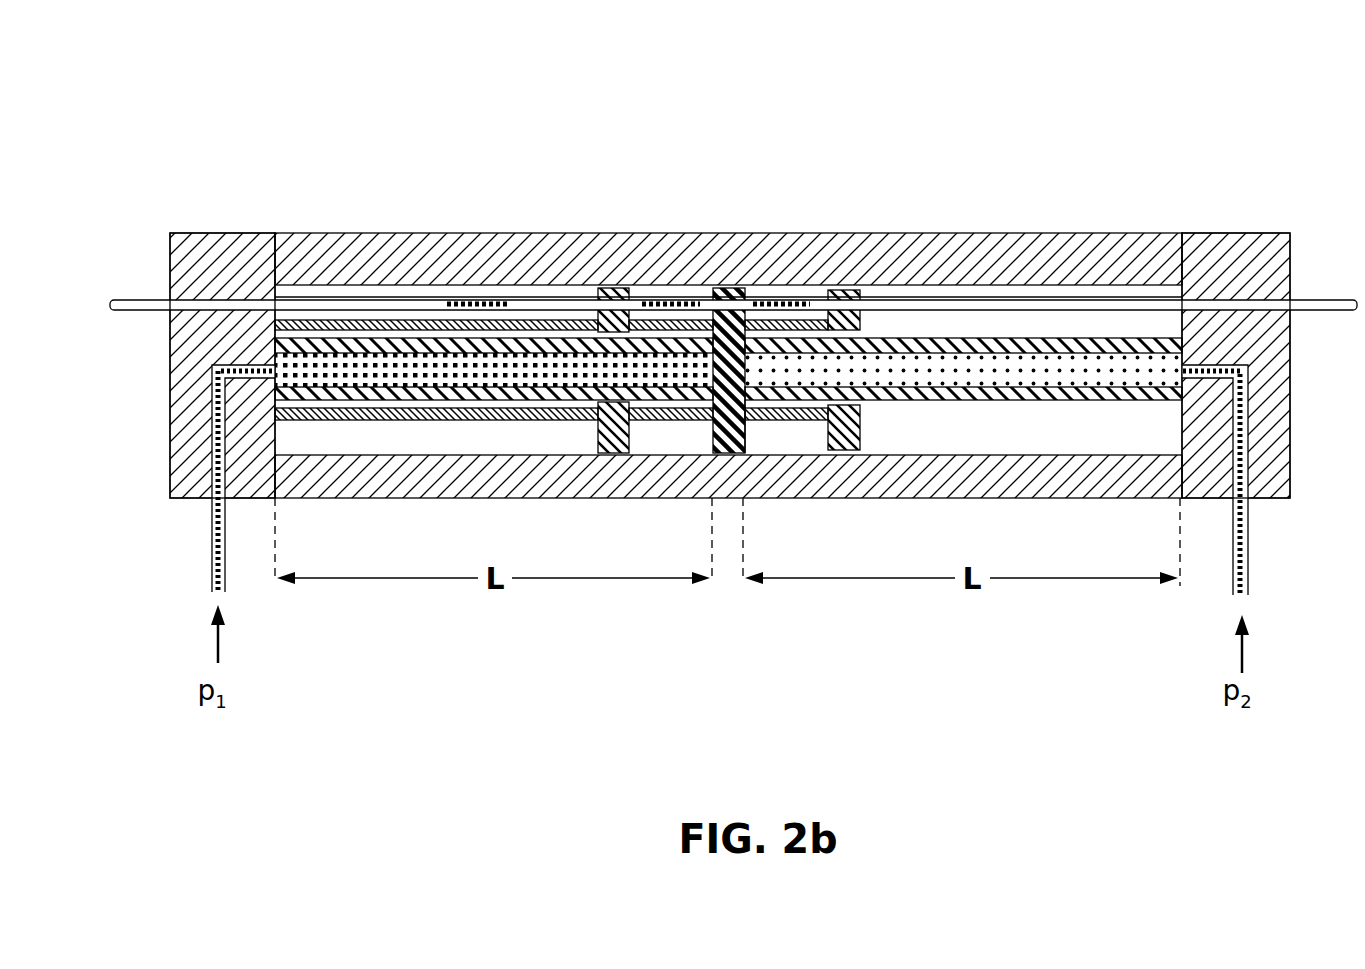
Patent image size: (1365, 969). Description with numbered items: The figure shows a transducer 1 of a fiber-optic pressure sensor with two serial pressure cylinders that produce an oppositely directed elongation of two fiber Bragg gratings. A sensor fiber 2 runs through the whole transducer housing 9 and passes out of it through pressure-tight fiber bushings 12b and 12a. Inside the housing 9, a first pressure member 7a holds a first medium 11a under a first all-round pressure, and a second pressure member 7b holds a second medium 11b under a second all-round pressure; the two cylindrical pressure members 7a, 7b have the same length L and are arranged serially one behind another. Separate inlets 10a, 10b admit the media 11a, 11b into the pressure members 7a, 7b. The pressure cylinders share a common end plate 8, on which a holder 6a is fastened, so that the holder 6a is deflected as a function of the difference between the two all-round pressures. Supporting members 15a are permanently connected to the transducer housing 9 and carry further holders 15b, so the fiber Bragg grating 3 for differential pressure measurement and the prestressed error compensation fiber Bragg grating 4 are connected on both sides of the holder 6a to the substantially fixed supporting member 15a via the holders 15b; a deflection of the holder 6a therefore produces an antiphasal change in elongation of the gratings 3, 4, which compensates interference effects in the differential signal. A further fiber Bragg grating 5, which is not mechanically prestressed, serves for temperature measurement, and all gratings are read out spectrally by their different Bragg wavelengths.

The transducer 1 is at (207, 89).
The sensor fiber 2 is at (133, 300).
The fiber Bragg grating 3 is at (672, 300).
The fiber Bragg grating 4 is at (797, 300).
The fiber Bragg grating 5 is at (480, 300).
The holder 6a is at (730, 305).
The first pressure member 7a is at (422, 340).
The second pressure member 7b is at (993, 340).
The common end plate 8 is at (745, 423).
The transducer housing 9 is at (170, 447).
The inlet 10a is at (212, 545).
The inlet 10b is at (1248, 560).
The first medium 11a is at (510, 373).
The second medium 11b is at (987, 373).
The fiber bushing 12a is at (1237, 297).
The fiber bushing 12b is at (218, 295).
The supporting member 15a is at (345, 322).
The holder 15b is at (607, 300).